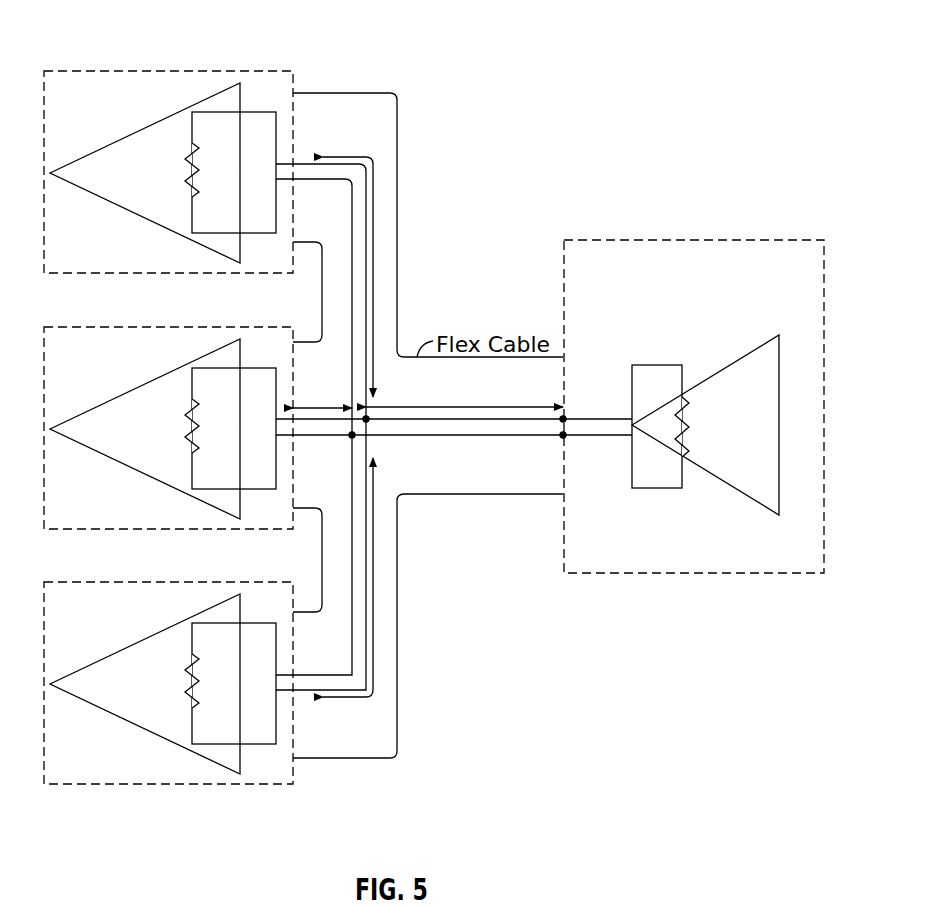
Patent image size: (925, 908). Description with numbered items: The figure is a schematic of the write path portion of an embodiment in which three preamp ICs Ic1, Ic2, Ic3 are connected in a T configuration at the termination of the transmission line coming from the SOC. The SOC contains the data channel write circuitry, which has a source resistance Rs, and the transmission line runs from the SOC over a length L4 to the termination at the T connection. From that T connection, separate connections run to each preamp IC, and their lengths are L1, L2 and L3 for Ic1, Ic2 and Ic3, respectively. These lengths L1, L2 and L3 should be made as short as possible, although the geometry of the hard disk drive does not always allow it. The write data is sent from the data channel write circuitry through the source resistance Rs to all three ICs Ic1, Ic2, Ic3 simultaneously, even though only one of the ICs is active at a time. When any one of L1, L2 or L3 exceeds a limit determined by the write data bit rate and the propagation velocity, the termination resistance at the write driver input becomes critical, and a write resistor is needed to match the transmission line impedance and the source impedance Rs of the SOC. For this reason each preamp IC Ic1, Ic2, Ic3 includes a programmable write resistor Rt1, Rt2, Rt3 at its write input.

The preamp IC Ic1 is at (163, 155).
The preamp IC Ic2 is at (163, 411).
The preamp IC Ic3 is at (163, 666).
The programmable write resistor Rt1 is at (212, 170).
The programmable write resistor Rt2 is at (212, 426).
The programmable write resistor Rt3 is at (212, 681).
The source resistance Rs is at (699, 427).
The element SOC is at (694, 391).
The connection length L1 is at (348, 264).
The connection length L2 is at (322, 394).
The connection length L3 is at (348, 592).
The transmission line length L4 is at (464, 394).